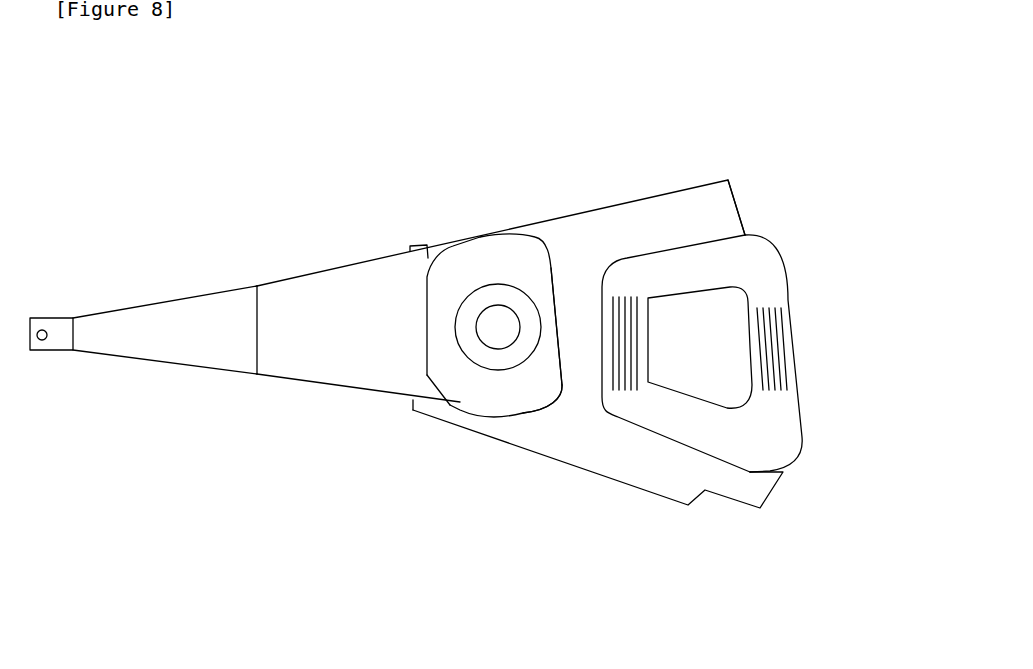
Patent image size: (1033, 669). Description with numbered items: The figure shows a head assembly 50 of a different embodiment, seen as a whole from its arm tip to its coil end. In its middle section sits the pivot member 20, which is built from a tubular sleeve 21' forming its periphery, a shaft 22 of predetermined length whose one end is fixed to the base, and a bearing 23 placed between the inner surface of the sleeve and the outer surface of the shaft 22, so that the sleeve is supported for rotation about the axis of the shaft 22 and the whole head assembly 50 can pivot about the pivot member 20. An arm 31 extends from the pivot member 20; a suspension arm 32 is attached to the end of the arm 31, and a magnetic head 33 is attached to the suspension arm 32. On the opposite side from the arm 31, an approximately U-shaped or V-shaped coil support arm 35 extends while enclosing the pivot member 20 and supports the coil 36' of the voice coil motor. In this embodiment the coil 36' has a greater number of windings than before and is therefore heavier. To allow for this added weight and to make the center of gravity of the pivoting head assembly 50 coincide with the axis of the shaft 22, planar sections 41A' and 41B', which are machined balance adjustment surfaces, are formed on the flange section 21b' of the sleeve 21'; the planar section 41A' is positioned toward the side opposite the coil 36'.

The pivot member 20 is at (557, 538).
The sleeve 21' is at (541, 461).
The flange section 21b' is at (506, 298).
The shaft 22 is at (498, 327).
The bearing 23 is at (462, 328).
The arm 31 is at (299, 303).
The suspension arm 32 is at (142, 332).
The magnetic head 33 is at (45, 328).
The coil support arm 35 is at (672, 204).
The coil 36' is at (710, 332).
The planar section 41A' is at (542, 273).
The planar section 41B' is at (441, 292).
The head assembly 50 is at (330, 254).